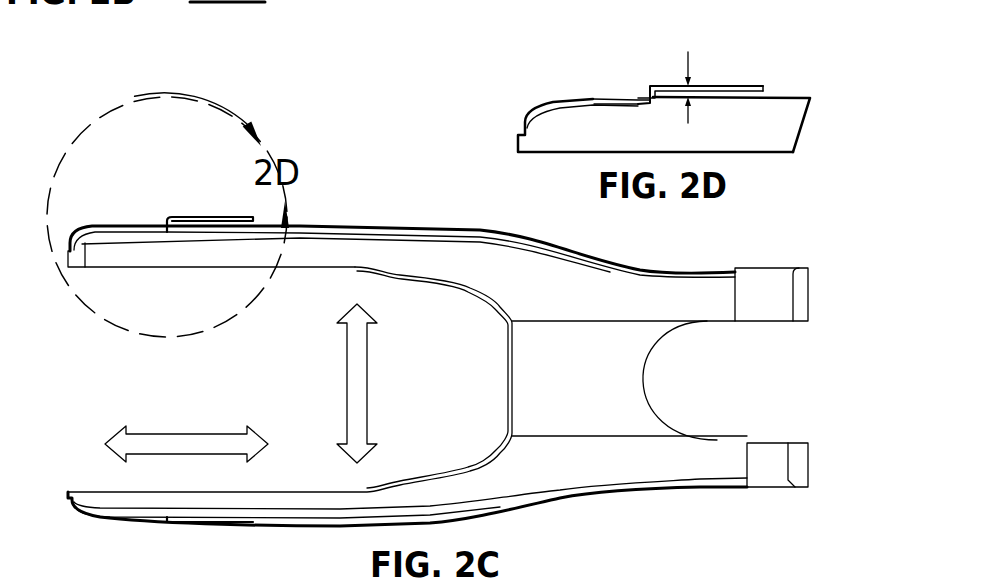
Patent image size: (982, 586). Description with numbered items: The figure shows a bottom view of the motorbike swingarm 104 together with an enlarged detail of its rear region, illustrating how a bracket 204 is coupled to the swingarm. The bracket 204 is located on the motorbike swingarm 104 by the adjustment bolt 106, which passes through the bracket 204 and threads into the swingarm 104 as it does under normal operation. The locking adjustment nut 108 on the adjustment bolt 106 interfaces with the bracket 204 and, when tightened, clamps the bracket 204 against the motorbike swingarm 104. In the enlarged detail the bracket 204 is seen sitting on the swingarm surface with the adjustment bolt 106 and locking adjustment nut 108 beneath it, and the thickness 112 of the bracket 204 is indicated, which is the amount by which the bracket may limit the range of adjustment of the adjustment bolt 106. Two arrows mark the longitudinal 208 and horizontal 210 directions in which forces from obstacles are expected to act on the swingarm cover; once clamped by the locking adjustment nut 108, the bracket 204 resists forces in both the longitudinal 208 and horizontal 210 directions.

In FIG. 2C, the motorbike swingarm 104 is at (791, 325).
In FIG. 2D, the adjustment bolt 106 is at (591, 97).
In FIG. 2D, the locking adjustment nut 108 is at (631, 92).
In FIG. 2D, the thickness 112 is at (686, 66).
In FIG. 2D, the bracket 204 is at (862, 46).
In FIG. 2C, the longitudinal direction 208 is at (186, 425).
In FIG. 2C, the horizontal direction 210 is at (387, 383).